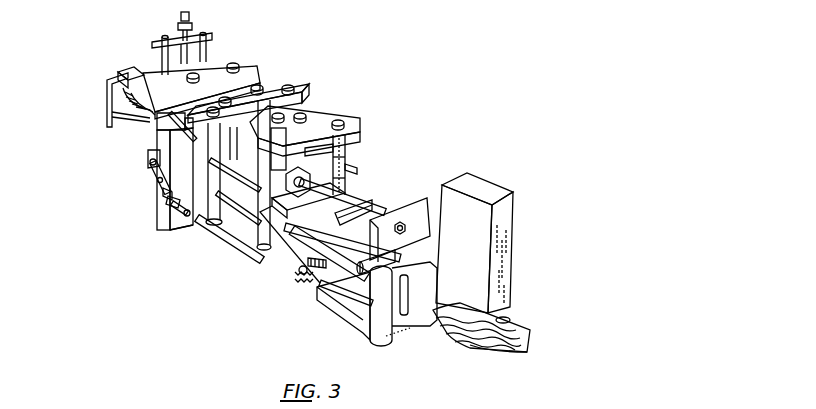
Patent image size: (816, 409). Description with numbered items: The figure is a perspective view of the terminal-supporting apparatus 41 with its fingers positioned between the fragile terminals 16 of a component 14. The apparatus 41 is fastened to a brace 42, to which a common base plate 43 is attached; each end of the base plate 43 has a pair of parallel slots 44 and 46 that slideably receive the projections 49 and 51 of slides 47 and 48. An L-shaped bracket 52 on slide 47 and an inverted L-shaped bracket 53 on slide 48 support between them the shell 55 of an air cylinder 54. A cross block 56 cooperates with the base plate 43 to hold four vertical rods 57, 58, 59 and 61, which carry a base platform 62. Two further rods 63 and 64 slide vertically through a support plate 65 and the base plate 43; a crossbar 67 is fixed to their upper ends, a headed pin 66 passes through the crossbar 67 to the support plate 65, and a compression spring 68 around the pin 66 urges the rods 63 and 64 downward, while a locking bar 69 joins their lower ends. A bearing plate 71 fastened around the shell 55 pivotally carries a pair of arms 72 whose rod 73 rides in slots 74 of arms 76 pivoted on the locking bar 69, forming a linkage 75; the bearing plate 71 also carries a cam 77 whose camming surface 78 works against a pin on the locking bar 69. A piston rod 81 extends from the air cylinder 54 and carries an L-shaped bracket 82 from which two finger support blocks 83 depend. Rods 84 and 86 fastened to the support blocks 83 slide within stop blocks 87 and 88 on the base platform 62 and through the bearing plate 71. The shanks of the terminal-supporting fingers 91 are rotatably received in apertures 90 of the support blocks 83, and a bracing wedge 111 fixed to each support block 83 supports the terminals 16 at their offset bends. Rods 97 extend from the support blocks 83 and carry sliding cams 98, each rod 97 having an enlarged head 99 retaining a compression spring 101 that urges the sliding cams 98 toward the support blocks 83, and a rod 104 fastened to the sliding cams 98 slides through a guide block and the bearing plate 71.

The component 14 is at (507, 240).
The terminals 16 is at (466, 344).
The terminal-supporting apparatus 41 is at (368, 63).
The brace 42 is at (128, 69).
The common base plate 43 is at (332, 114).
The slot 44 is at (346, 139).
The slot 46 is at (308, 153).
The slide 47 is at (309, 113).
The slide 48 is at (107, 78).
The projection 49 is at (346, 157).
The projection 51 is at (290, 170).
The L-shaped bracket 52 is at (346, 178).
The inverted L-shaped bracket 53 is at (112, 101).
The air cylinder 54 is at (122, 118).
The shell 55 is at (246, 196).
The cross block 56 is at (262, 87).
The vertical rod 57 is at (358, 170).
The vertical rod 58 is at (242, 249).
The vertical rod 59 is at (220, 221).
The vertical rod 61 is at (295, 88).
The base platform 62 is at (206, 237).
The rod 63 is at (213, 57).
The rod 64 is at (158, 45).
The support plate 65 is at (239, 65).
The headed pin 66 is at (192, 17).
The crossbar 67 is at (207, 39).
The compression spring 68 is at (178, 26).
The locking bar 69 is at (150, 156).
The bearing plate 71 is at (173, 232).
The arm 72 is at (182, 215).
The rod 73 is at (168, 206).
The slot 74 is at (162, 193).
The linkage 75 is at (154, 202).
The arm 76 is at (151, 164).
The cam 77 is at (157, 137).
The camming surface 78 is at (190, 91).
The piston rod 81 is at (312, 199).
The L-shaped bracket 82 is at (418, 207).
The finger support block 83 is at (372, 343).
The rod 84 is at (378, 211).
The rod 86 is at (158, 181).
The stop block 87 is at (352, 202).
The stop block 88 is at (258, 262).
The aperture 90 is at (396, 338).
The terminal-supporting finger 91 is at (492, 350).
The rod 97 is at (372, 265).
The sliding cam 98 is at (348, 320).
The enlarged head 99 is at (299, 274).
The compression spring 101 is at (299, 285).
The rod 104 is at (298, 265).
The bracing wedge 111 is at (510, 318).